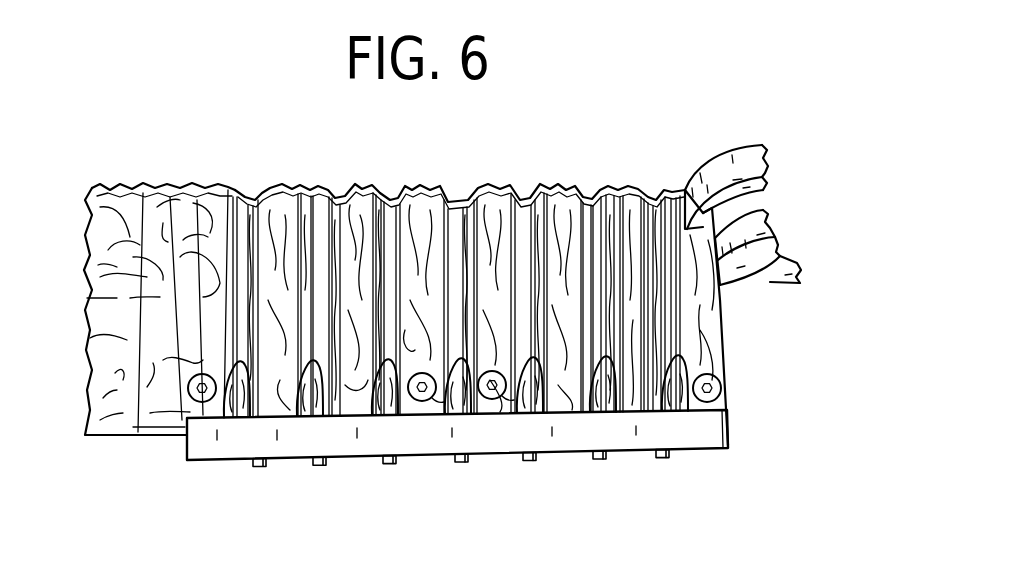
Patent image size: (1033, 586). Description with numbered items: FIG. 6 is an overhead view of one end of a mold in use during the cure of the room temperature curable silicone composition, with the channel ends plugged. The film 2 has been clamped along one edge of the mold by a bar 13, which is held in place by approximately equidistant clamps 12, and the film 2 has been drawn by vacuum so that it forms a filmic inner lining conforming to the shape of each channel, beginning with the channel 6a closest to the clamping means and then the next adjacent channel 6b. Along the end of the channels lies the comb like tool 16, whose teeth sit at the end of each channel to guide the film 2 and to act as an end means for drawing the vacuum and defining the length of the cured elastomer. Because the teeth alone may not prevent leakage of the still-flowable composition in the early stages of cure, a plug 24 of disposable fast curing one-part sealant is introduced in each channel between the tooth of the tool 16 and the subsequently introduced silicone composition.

The film 2 is at (100, 320).
The channel 6a is at (672, 195).
The channel 6b is at (590, 187).
The clamps 12 is at (772, 222).
The bar 13 is at (700, 326).
The comb like tool 16 is at (577, 438).
The plug 24 is at (310, 409).